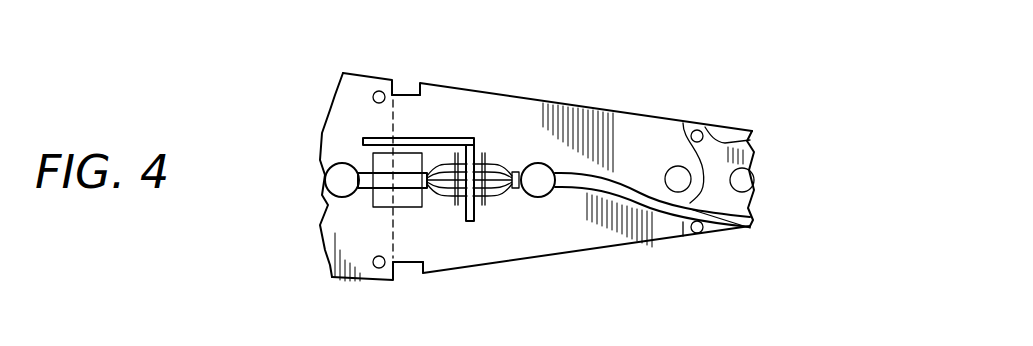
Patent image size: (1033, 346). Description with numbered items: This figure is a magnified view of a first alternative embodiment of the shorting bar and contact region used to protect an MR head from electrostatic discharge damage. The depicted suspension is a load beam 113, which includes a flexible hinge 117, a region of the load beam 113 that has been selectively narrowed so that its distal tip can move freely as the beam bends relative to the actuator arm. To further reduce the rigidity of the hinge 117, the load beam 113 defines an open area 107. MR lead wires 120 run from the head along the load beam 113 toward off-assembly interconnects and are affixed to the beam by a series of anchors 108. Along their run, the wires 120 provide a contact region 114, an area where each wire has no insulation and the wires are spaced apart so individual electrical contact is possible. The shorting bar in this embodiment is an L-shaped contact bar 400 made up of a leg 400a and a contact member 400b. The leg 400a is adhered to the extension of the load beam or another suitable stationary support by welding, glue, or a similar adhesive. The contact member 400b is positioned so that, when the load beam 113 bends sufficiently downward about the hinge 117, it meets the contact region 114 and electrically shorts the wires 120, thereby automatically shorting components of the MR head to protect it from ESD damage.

The open area 107 is at (362, 168).
The anchors 108 is at (337, 186).
The load beam 113 is at (625, 112).
The contact region 114 is at (503, 153).
The flexible hinge 117 is at (405, 92).
The MR lead wires 120 is at (657, 197).
The L-shaped contact bar 400 is at (395, 189).
The leg 400a is at (432, 138).
The contact member 400b is at (468, 222).